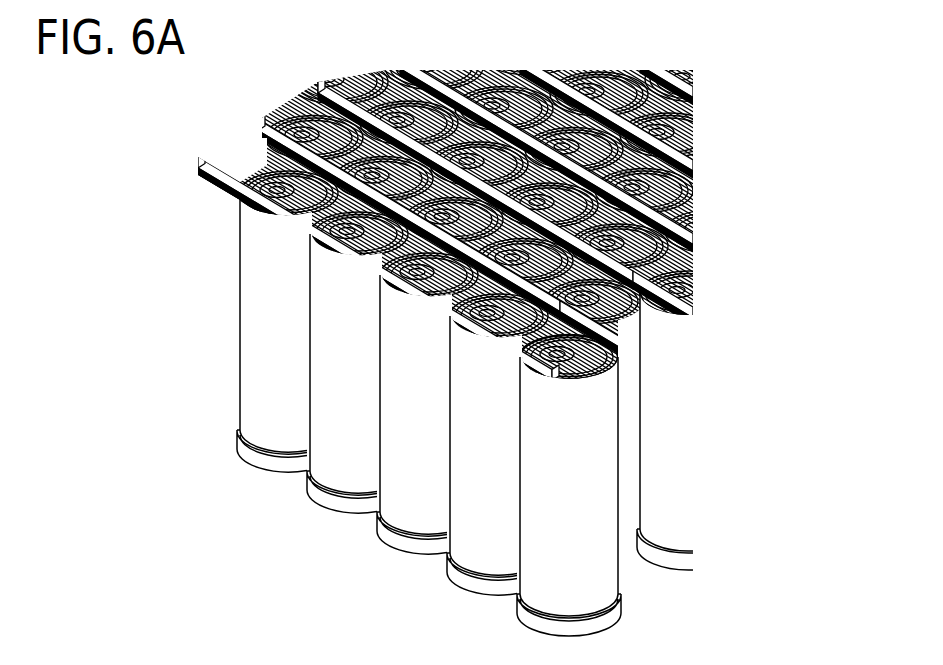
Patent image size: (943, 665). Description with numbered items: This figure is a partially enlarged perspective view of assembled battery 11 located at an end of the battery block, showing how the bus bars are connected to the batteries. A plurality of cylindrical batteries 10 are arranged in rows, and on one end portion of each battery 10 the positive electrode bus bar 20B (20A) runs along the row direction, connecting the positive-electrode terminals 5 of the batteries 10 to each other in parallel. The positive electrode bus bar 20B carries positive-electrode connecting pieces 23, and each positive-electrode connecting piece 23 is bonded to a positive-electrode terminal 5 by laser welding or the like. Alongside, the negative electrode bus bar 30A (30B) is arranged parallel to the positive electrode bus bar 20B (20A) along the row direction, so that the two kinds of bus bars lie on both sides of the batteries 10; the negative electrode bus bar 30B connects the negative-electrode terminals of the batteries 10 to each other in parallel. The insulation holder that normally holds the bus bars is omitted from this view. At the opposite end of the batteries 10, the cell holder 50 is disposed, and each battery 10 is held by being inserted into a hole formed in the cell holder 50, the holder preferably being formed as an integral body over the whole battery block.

The positive-electrode terminal 5 is at (546, 368).
The battery 10 is at (262, 324).
The assembled battery 11 is at (598, 481).
The positive electrode bus bar 20A is at (693, 307).
The positive electrode bus bar 20B is at (613, 337).
The positive-electrode connecting piece 23 is at (615, 387).
The negative electrode bus bar 30A is at (198, 157).
The negative electrode bus bar 30B is at (260, 120).
The cell holder 50 is at (256, 458).